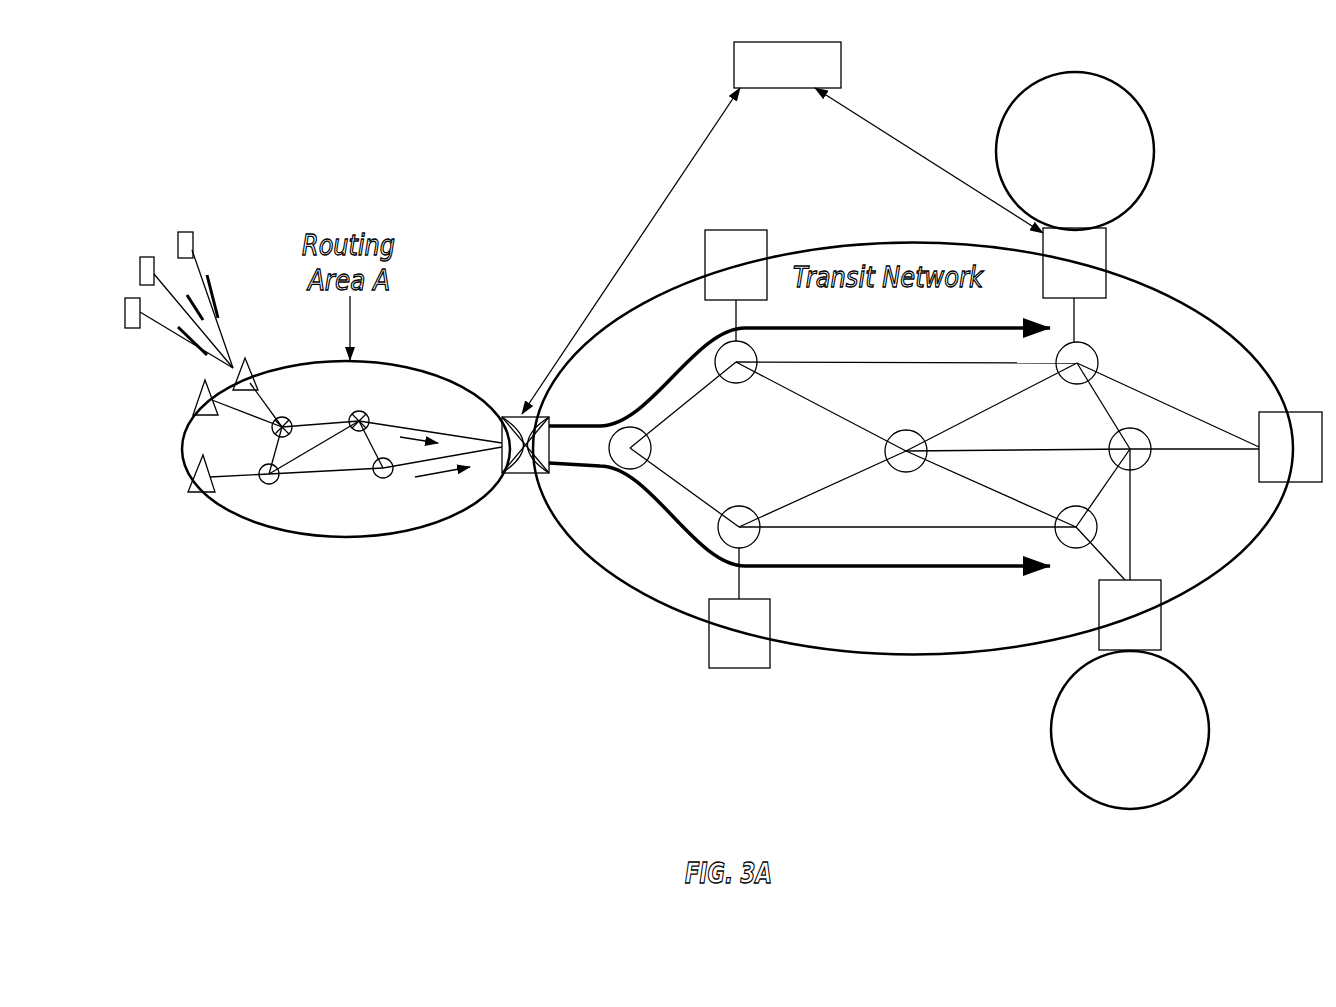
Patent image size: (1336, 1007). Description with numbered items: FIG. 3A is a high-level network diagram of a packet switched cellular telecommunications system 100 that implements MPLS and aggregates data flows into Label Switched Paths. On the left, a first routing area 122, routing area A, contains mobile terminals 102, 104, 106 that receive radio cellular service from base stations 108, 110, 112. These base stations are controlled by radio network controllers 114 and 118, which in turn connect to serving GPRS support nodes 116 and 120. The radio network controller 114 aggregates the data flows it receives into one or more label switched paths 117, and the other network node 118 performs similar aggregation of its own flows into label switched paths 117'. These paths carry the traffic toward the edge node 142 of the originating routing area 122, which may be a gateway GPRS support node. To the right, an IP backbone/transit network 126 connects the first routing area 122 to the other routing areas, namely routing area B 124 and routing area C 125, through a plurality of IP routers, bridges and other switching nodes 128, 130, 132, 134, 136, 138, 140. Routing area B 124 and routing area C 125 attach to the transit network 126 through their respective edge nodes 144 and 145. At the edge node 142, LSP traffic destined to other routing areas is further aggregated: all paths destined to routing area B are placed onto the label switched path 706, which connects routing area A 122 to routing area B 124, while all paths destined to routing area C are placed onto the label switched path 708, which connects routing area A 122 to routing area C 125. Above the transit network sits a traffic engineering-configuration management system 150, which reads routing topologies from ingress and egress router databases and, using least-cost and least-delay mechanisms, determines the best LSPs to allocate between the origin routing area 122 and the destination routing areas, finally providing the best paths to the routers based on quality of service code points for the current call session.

The packet switched cellular telecommunications system 100 is at (413, 173).
The mobile terminal 102 is at (131, 298).
The mobile terminal 104 is at (149, 257).
The mobile terminal 106 is at (189, 232).
The base station 108 is at (246, 357).
The base station 110 is at (205, 388).
The base station 112 is at (203, 455).
The radio network controller 114 is at (290, 418).
The serving GPRS support node 116 is at (365, 412).
The label switched path 117 is at (470, 397).
The label switched path 117' is at (471, 516).
The radio network controller 118 is at (273, 485).
The serving GPRS support node 120 is at (381, 480).
The first routing area 122 is at (378, 364).
The routing area B 124 is at (1210, 730).
The routing area C 125 is at (1077, 72).
The IP backbone/transit network 126 is at (878, 243).
The switching node 128 is at (651, 447).
The switching node 130 is at (727, 344).
The switching node 132 is at (1097, 358).
The switching node 134 is at (904, 431).
The switching node 136 is at (729, 508).
The switching node 138 is at (1075, 507).
The switching node 140 is at (1143, 468).
The edge node 142 is at (530, 473).
The edge node 144 is at (1161, 632).
The edge node 145 is at (1106, 256).
The traffic engineering-configuration management system 150 is at (816, 42).
The label switched path 706 is at (862, 566).
The label switched path 708 is at (640, 395).